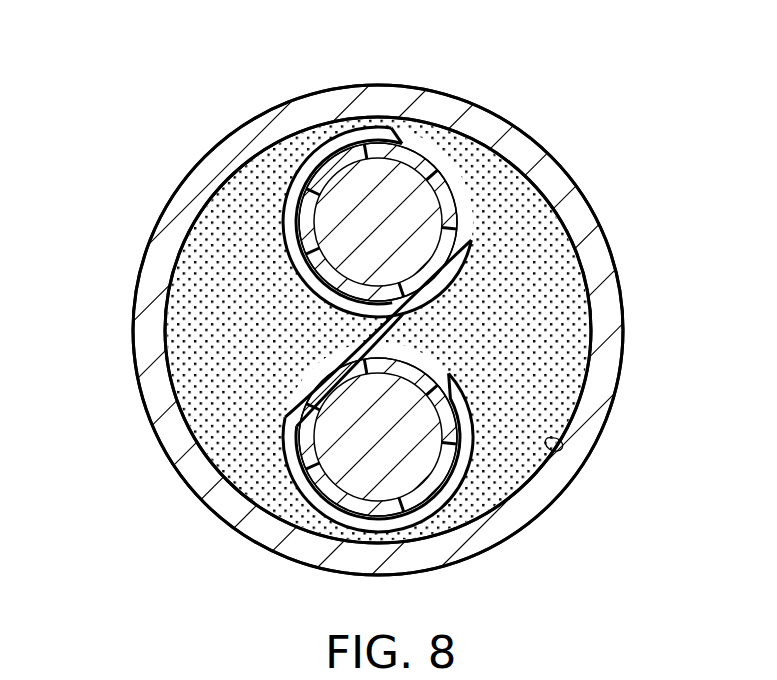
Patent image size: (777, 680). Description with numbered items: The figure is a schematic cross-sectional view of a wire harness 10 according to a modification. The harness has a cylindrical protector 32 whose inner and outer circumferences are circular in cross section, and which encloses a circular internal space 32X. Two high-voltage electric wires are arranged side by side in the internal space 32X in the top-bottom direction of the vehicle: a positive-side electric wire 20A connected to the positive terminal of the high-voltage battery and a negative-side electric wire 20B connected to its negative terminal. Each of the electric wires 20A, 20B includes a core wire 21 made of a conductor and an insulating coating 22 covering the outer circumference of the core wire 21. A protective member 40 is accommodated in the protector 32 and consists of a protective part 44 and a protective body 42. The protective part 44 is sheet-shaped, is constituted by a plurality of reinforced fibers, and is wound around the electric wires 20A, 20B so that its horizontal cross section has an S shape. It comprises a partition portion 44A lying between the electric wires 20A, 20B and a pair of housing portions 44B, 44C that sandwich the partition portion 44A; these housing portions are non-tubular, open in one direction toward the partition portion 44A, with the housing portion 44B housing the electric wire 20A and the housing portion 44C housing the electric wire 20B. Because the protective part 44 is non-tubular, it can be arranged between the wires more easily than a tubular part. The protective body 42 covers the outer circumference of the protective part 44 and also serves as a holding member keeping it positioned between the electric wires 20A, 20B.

The wire harness 10 is at (698, 104).
The positive-side electric wire 20A is at (258, 78).
The negative-side electric wire 20B is at (260, 586).
The core wire 21 is at (337, 200).
The insulating coating 22 is at (346, 156).
The protector 32 is at (603, 417).
The internal space 32X is at (552, 438).
The protective member 40 is at (680, 302).
The protective body 42 is at (562, 353).
The protective part 44 is at (350, 329).
The partition portion 44A is at (352, 337).
The housing portion 44B is at (290, 210).
The housing portion 44C is at (292, 450).